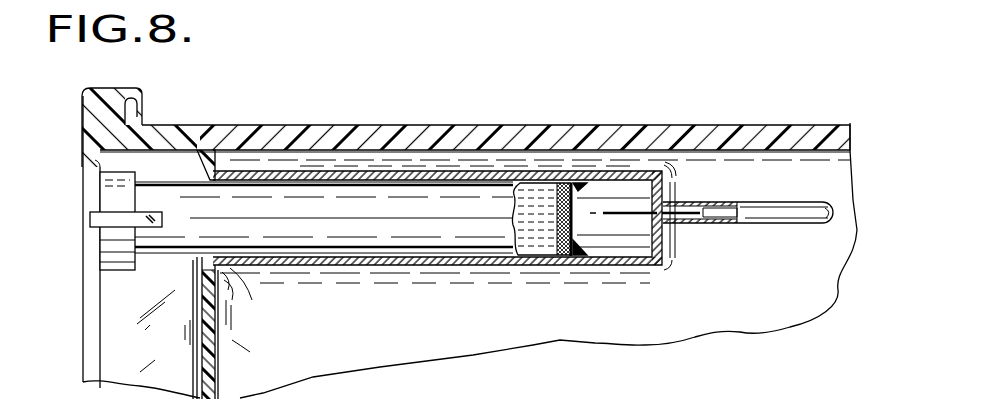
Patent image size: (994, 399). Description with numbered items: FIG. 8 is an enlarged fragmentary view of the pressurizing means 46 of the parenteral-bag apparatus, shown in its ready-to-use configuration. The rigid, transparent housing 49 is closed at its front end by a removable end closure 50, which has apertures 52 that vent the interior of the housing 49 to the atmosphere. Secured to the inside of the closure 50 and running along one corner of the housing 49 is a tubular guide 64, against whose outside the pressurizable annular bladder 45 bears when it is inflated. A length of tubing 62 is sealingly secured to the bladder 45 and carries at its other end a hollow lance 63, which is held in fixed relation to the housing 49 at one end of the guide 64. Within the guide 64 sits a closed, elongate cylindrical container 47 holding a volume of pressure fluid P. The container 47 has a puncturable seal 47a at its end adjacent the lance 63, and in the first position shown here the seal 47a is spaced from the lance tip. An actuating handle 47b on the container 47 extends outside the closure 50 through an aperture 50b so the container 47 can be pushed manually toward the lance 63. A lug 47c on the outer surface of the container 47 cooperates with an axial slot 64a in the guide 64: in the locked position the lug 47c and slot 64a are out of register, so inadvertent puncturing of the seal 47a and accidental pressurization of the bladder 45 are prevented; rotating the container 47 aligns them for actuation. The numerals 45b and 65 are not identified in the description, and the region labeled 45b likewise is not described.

The annular bladder 45 is at (743, 287).
The body portion 45b is at (386, 6).
The pressurizing means 46 is at (412, 168).
The container 47 is at (527, 180).
The puncturable seal 47a is at (578, 242).
The actuating handle 47b is at (100, 202).
The lug 47c is at (152, 213).
The housing 49 is at (803, 123).
The removable end closure 50 is at (200, 360).
The aperture 50b is at (205, 165).
The apertures 52 is at (239, 9).
The tubing 62 is at (807, 202).
The hollow lance 63 is at (637, 212).
The tubular guide 64 is at (636, 172).
The axial slot 64a is at (223, 270).
The member 65 is at (771, 0).
The pressure fluid P is at (545, 213).